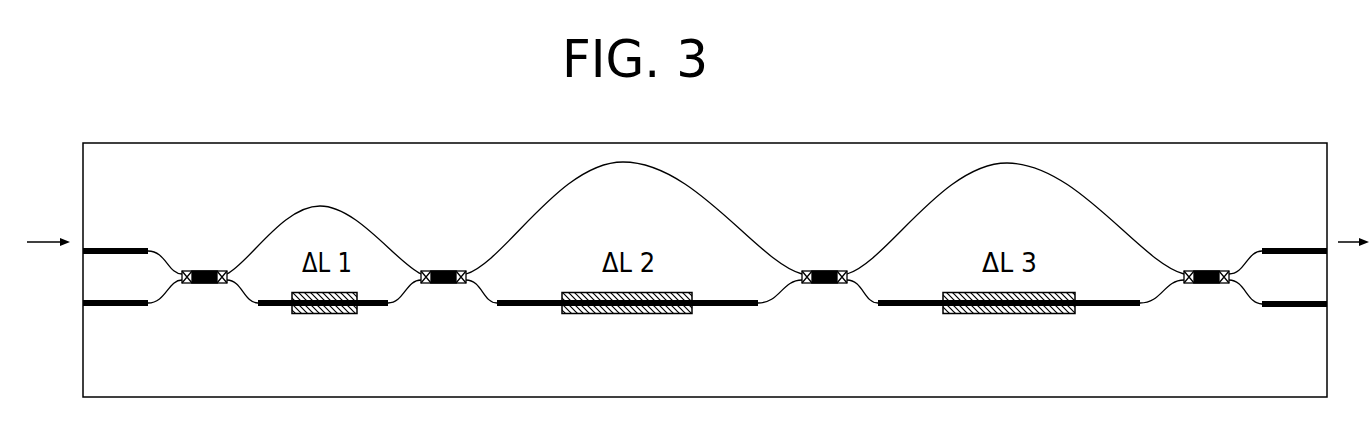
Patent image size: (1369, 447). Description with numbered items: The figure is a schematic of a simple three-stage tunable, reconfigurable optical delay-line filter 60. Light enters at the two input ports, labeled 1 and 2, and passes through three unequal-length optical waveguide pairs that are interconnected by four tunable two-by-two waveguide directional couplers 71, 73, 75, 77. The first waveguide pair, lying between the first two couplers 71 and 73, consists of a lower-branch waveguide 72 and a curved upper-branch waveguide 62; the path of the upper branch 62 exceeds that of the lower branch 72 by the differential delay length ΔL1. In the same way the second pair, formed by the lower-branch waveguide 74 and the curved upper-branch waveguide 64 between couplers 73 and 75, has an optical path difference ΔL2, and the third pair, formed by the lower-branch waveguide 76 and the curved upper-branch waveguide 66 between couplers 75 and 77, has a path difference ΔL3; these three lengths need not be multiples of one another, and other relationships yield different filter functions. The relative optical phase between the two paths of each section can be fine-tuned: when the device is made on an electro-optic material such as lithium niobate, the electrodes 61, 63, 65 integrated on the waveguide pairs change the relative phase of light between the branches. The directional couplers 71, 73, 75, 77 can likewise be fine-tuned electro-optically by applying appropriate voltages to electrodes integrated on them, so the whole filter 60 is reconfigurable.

The three-stage tunable filter 60 is at (722, 132).
The input port 1 is at (115, 233).
The input port 2 is at (115, 322).
The electrode 61 is at (342, 315).
The upper-branch waveguide 62 is at (301, 209).
The electrode 63 is at (588, 318).
The upper-branch waveguide of second pair 64 is at (583, 173).
The electrode 65 is at (1052, 317).
The upper-branch waveguide of third pair 66 is at (966, 172).
The tunable 2×2 waveguide directional coupler 71 is at (228, 270).
The lower-branch waveguide 72 is at (272, 308).
The tunable 2×2 waveguide directional coupler 73 is at (458, 270).
The lower-branch waveguide of second pair 74 is at (528, 307).
The tunable 2×2 waveguide directional coupler 75 is at (847, 271).
The lower-branch waveguide of third pair 76 is at (912, 307).
The tunable 2×2 waveguide directional coupler 77 is at (1220, 271).